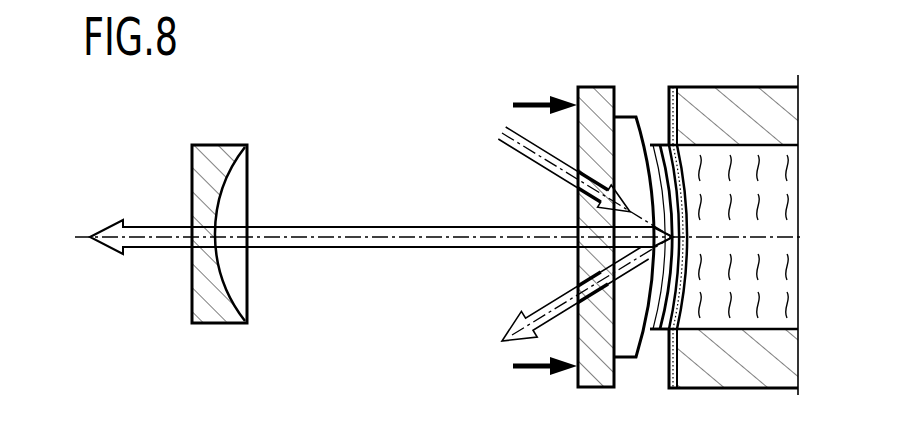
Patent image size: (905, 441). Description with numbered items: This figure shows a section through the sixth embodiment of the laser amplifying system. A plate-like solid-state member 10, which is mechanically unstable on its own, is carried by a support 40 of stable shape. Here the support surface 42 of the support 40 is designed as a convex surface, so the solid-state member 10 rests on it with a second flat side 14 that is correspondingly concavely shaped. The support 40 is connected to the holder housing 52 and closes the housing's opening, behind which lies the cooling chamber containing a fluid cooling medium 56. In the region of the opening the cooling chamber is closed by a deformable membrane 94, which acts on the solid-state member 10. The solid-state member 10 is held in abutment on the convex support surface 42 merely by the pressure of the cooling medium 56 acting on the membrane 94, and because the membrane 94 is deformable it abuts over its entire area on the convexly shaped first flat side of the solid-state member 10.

The solid-state member 10 is at (657, 150).
The second flat side 14 is at (645, 300).
The support 40 is at (579, 388).
The support surface 42 is at (650, 226).
The holder housing 52 is at (772, 117).
The fluid cooling medium 56 is at (788, 301).
The membrane 94 is at (667, 368).